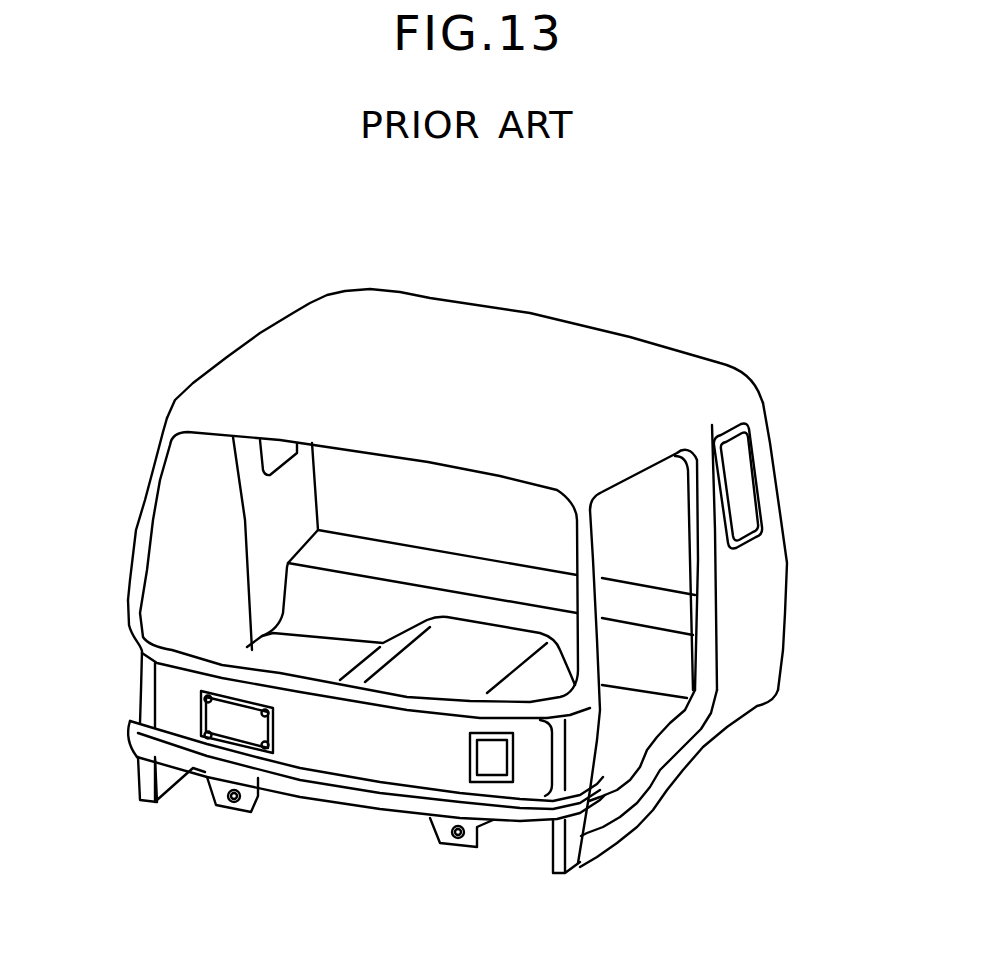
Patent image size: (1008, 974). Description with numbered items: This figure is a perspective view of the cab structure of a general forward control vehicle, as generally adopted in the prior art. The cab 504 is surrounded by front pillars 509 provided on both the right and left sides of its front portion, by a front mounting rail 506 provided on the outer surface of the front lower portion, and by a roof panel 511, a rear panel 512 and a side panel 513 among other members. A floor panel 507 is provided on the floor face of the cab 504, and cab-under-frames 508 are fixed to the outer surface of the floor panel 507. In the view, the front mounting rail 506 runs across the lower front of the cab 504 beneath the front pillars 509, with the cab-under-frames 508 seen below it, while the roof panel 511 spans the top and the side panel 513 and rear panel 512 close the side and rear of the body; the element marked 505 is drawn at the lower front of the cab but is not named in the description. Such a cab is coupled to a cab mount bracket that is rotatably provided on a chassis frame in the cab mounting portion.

The cab 504 is at (572, 294).
The lower front panel 505 is at (508, 832).
The front mounting rail 506 is at (333, 797).
The floor panel 507 is at (630, 735).
The cab-under-frame 508 is at (217, 807).
The front pillar 509 is at (557, 750).
The roof panel 511 is at (307, 333).
The rear panel 512 is at (788, 563).
The side panel 513 is at (733, 685).